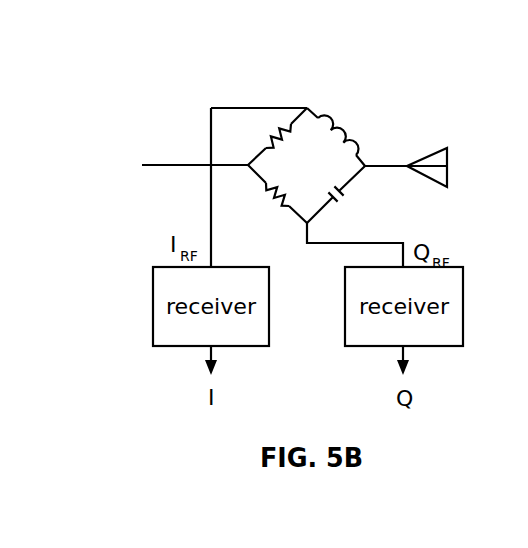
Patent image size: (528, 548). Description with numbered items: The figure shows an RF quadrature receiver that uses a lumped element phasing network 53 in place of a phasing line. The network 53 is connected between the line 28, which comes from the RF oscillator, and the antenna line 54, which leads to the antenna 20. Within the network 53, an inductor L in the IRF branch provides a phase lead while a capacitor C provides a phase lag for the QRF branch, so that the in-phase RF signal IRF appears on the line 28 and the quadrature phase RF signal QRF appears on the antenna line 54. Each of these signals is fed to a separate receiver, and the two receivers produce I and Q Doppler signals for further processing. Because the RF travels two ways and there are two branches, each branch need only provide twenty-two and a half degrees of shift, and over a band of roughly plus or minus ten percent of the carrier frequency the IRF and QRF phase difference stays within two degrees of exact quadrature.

The line 28 is at (168, 162).
The lumped element phasing network 53 is at (357, 82).
The antenna line 54 is at (378, 158).
The antenna 20 is at (452, 166).